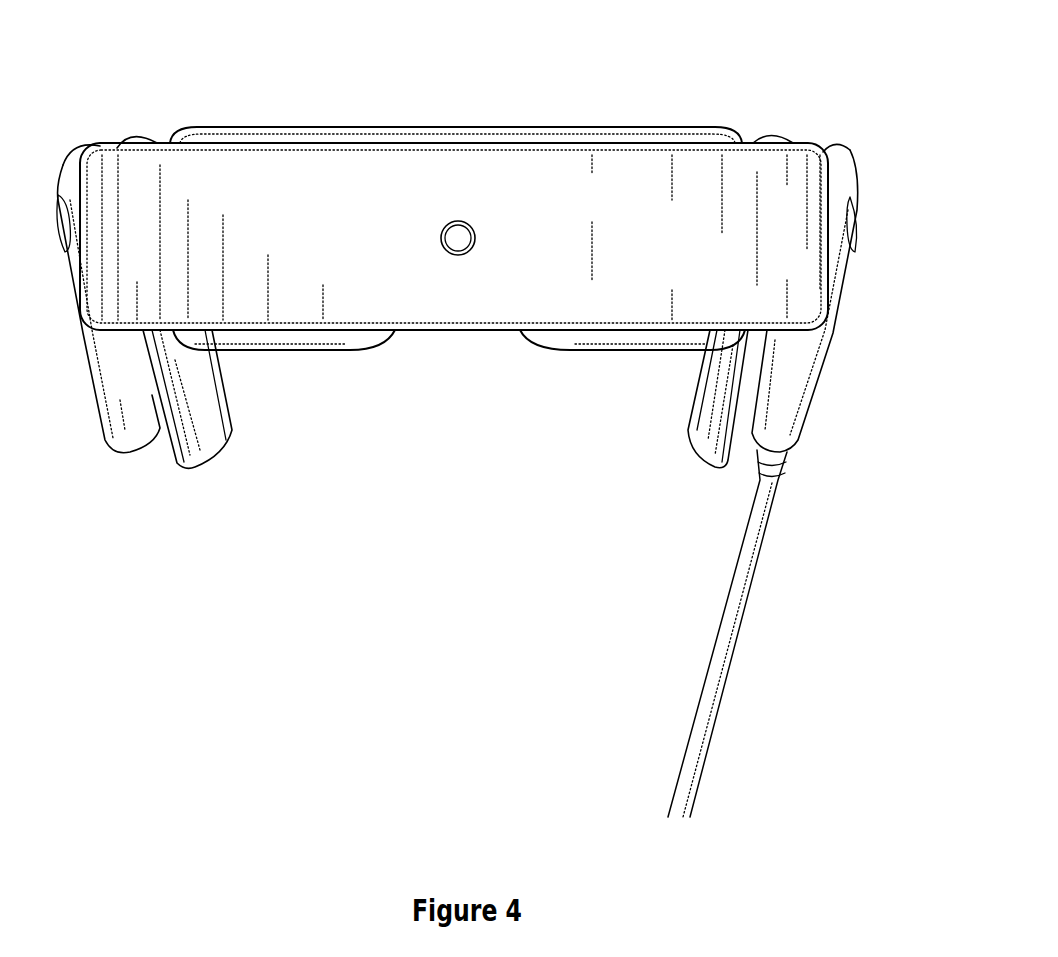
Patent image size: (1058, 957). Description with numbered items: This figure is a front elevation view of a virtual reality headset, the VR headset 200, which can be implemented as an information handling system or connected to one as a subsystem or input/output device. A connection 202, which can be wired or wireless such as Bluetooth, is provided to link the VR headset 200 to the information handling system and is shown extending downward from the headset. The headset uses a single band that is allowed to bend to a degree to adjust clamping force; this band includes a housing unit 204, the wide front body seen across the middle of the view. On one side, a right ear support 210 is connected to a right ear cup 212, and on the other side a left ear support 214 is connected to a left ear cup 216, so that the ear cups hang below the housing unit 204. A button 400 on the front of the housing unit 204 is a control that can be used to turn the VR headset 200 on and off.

The VR headset 200 is at (823, 40).
The connection 202 is at (753, 553).
The housing unit 204 is at (531, 178).
The right ear support 210 is at (117, 425).
The right ear cup 212 is at (207, 428).
The left ear support 214 is at (808, 385).
The left ear cup 216 is at (692, 403).
The button 400 is at (457, 237).